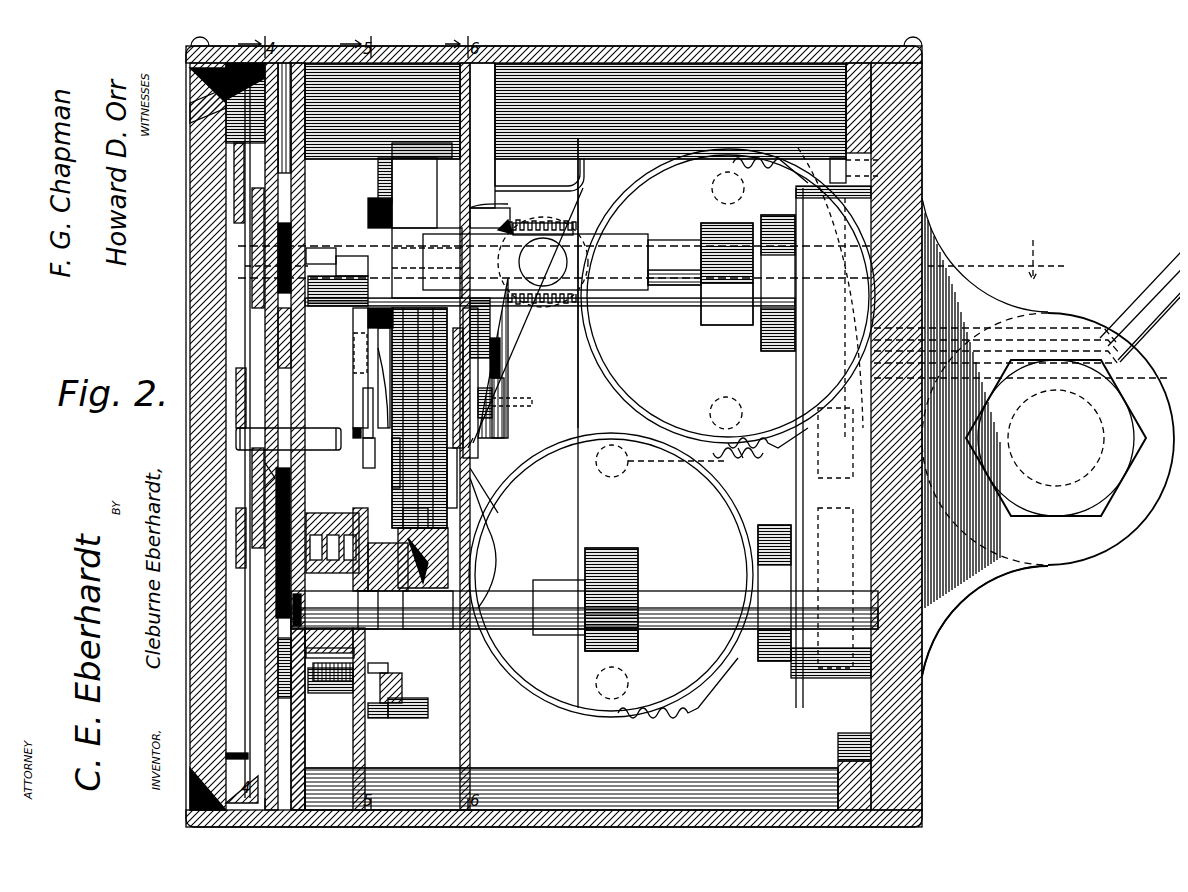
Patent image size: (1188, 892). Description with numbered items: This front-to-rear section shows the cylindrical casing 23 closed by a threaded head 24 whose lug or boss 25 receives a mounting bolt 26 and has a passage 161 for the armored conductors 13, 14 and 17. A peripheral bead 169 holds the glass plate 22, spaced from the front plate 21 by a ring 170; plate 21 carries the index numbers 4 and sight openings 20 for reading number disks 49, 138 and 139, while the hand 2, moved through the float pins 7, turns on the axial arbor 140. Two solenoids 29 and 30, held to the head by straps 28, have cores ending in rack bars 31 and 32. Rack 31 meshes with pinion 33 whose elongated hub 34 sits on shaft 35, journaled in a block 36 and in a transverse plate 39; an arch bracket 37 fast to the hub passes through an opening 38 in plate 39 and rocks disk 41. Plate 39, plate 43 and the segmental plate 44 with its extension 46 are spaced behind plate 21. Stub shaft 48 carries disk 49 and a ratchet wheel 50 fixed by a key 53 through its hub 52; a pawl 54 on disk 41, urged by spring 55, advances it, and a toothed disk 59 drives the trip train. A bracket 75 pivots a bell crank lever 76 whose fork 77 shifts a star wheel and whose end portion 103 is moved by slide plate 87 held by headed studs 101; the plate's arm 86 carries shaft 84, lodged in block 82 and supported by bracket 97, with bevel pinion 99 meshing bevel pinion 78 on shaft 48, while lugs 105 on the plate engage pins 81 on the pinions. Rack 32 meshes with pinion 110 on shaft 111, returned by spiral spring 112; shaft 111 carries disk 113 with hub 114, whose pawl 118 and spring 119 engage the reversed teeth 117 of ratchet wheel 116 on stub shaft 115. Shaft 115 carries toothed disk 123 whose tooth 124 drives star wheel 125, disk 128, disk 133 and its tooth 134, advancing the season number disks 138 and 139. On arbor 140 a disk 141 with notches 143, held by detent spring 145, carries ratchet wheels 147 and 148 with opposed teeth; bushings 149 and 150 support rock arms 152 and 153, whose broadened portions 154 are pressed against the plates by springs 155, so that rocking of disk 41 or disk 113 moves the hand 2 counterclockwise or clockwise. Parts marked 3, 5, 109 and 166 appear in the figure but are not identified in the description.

The hand 2 is at (226, 160).
The partition plate 3 is at (170, 250).
The index numbers 4 is at (242, 784).
The section line 5 is at (226, 745).
The pins 7 is at (320, 465).
The conductor 13 is at (1135, 300).
The conductor 14 is at (1160, 300).
The conductor 17 is at (1158, 272).
The sight openings 20 is at (255, 530).
The front plate 21 is at (257, 292).
The glass plate 22 is at (283, 322).
The casing 23 is at (600, 775).
The head 24 is at (900, 728).
The lug or boss 25 is at (1048, 437).
The bolt 26 is at (1056, 438).
The straps 28 is at (600, 400).
The electromagnet 29 is at (728, 303).
The electromagnet 30 is at (611, 575).
The rack bar 31 is at (725, 305).
The rack bar 32 is at (600, 548).
The pinion 33 is at (700, 225).
The elongated hub 34 is at (674, 262).
The shaft 35 is at (795, 250).
The block 36 is at (920, 645).
The arch bracket 37 is at (556, 262).
The opening 38 is at (476, 197).
The plate 39 is at (462, 720).
The disk 41 is at (427, 255).
The plate 43 is at (297, 752).
The plate 44 is at (357, 752).
The terminal extension 46 is at (346, 342).
The stub shaft 48 is at (244, 234).
The disk 49 is at (270, 190).
The ratchet wheel 50 is at (360, 200).
The hub 52 is at (321, 255).
The key 53 is at (338, 255).
The pawl 54 is at (368, 165).
The spring 55 is at (422, 185).
The toothed disk 59 is at (345, 320).
The bracket 75 is at (355, 392).
The bell crank lever 76 is at (370, 350).
The fork 77 is at (360, 305).
The bevel pinion 78 is at (500, 214).
The pin 81 is at (475, 305).
The block 82 is at (575, 345).
The shaft 84 is at (543, 262).
The arm 86 is at (530, 325).
The slide plate 87 is at (470, 448).
The bracket 97 is at (572, 172).
The bevel pinion 99 is at (535, 222).
The headed studs 101 is at (496, 410).
The end portion 103 is at (496, 390).
The lugs or projections 105 is at (470, 330).
The collar 109 is at (770, 215).
The pinion 110 is at (590, 640).
The shaft 111 is at (497, 595).
The spiral spring 112 is at (765, 650).
The disk 113 is at (394, 680).
The hub 114 is at (380, 660).
The stub shaft 115 is at (584, 610).
The ratchet wheel 116 is at (375, 610).
The teeth 117 is at (388, 559).
The pawl 118 is at (418, 695).
The spring 119 is at (375, 712).
The toothed disk 123 is at (330, 686).
The peripheral tooth 124 is at (256, 545).
The star wheel 125 is at (270, 670).
The disk 128 is at (322, 675).
The disk 133 is at (356, 430).
The peripheral tooth 134 is at (300, 540).
The number disk 138 is at (282, 490).
The number disk 139 is at (267, 470).
The arbor 140 is at (288, 438).
The disk 141 is at (445, 480).
The notches 143 is at (415, 490).
The detent spring 145 is at (355, 515).
The ratchet wheel 147 is at (384, 450).
The ratchet wheel 148 is at (420, 512).
The bushing 149 is at (370, 415).
The bushing 150 is at (472, 403).
The rock arm 152 is at (428, 610).
The rock arm 153 is at (475, 355).
The broadened portions 154 is at (370, 375).
The springs 155 is at (480, 470).
The passage 161 is at (950, 330).
The bar 166 is at (455, 340).
The peripheral bead 169 is at (182, 63).
The ring 170 is at (182, 98).